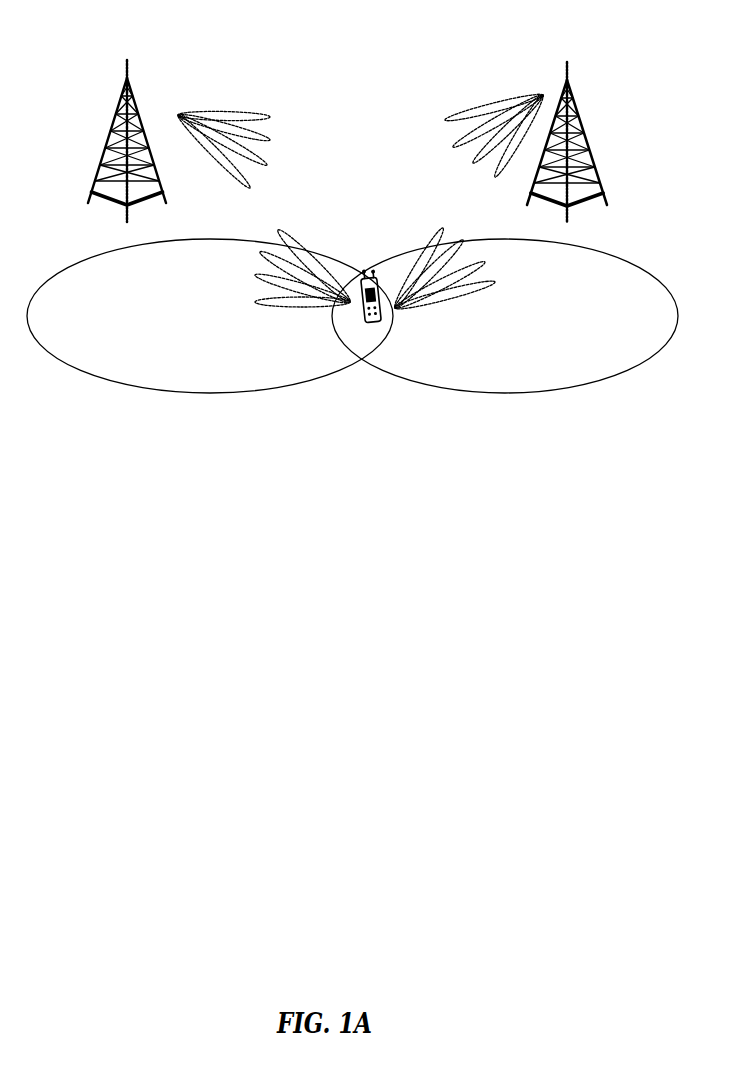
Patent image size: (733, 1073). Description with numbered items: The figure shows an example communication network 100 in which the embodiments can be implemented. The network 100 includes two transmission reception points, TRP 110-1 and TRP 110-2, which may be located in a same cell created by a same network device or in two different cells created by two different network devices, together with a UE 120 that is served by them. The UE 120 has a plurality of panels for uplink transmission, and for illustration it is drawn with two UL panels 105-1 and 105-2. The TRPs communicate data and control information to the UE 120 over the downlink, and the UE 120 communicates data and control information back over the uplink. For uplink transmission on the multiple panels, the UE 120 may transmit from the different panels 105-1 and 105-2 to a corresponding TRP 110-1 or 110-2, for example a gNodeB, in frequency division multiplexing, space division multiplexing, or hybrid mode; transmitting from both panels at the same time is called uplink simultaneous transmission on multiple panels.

The communication network 100 is at (115, 38).
The TRP 110-1 is at (131, 109).
The TRP 110-2 is at (574, 105).
The UL panel 105-1 is at (297, 297).
The UL panel 105-2 is at (420, 310).
The UE 120 is at (372, 323).